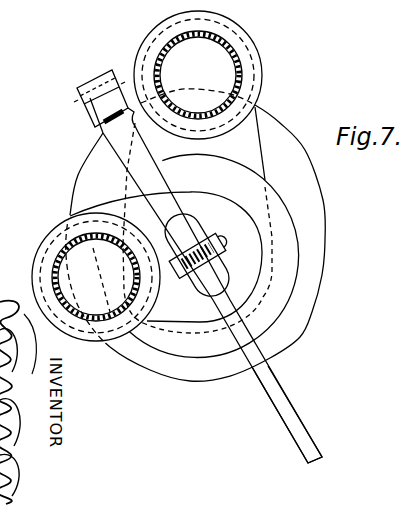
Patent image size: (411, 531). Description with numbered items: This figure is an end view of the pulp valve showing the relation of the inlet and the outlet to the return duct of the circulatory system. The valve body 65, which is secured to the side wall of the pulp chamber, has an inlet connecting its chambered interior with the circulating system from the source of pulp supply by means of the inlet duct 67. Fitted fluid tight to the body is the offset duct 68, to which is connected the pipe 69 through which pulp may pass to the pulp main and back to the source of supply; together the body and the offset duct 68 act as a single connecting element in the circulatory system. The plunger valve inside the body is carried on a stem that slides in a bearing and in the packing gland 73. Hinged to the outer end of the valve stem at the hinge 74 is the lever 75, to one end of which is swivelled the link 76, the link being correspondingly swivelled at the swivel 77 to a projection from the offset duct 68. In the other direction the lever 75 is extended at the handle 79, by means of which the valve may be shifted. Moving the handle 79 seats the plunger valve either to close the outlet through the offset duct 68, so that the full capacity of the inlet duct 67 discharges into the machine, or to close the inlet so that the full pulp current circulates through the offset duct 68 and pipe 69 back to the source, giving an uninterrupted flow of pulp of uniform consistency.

The valve body 65 is at (248, 155).
The inlet duct 67 is at (235, 78).
The offset duct 68 is at (248, 248).
The pipe 69 is at (70, 250).
The packing gland 73 is at (203, 226).
The hinge 74 is at (221, 260).
The lever 75 is at (158, 186).
The link 76 is at (97, 88).
The swivel 77 is at (83, 110).
The handle 79 is at (318, 426).